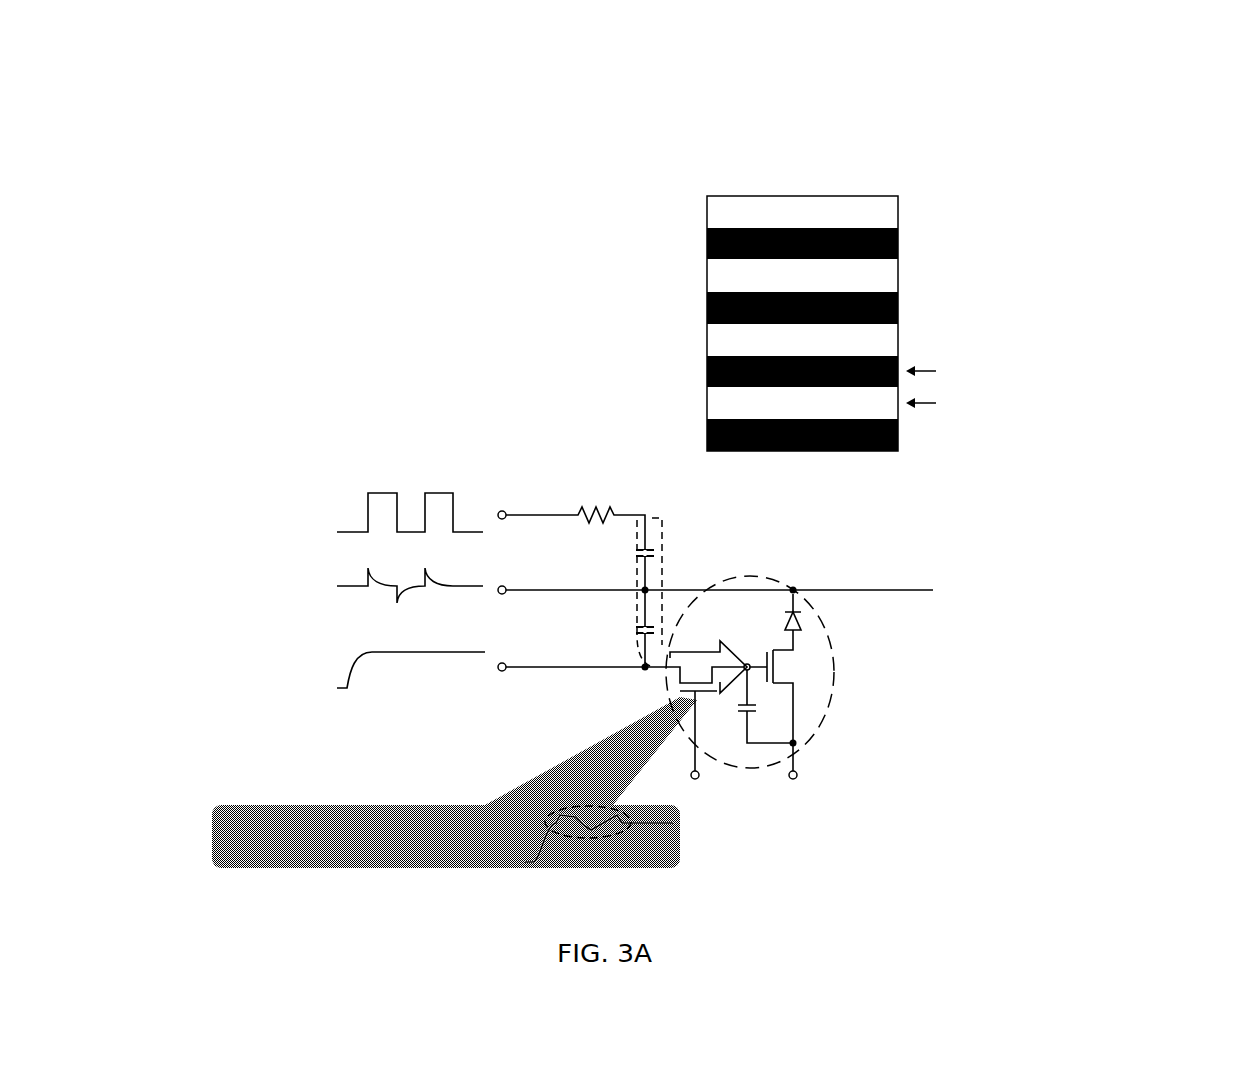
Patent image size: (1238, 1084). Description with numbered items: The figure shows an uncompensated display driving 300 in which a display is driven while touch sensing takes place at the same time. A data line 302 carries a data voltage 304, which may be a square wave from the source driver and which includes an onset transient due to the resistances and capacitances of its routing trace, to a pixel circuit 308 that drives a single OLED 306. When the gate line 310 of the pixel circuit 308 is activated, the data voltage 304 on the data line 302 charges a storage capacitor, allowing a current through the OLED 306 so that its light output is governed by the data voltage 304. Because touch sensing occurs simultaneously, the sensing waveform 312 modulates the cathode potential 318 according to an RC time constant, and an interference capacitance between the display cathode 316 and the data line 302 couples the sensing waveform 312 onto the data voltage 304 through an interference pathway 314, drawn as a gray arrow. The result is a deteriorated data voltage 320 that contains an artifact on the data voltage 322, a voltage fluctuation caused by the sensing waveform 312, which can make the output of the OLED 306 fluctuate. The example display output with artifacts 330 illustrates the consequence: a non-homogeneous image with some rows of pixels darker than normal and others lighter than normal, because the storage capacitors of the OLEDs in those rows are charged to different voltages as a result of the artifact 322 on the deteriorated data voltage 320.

The uncompensated display driving 300 is at (975, 97).
The example display output with artifacts 330 is at (897, 196).
The sensing waveform 312 is at (289, 512).
The cathode potential 318 is at (295, 585).
The data voltage 304 is at (318, 664).
The data line 302 is at (528, 672).
The interference pathway 314 is at (646, 533).
The display cathode 316 is at (898, 595).
The OLED 306 is at (805, 622).
The pixel circuit 308 is at (849, 694).
The gate line 310 is at (687, 760).
The deteriorated data voltage 320 is at (454, 809).
The artifact on the data voltage 322 is at (578, 837).